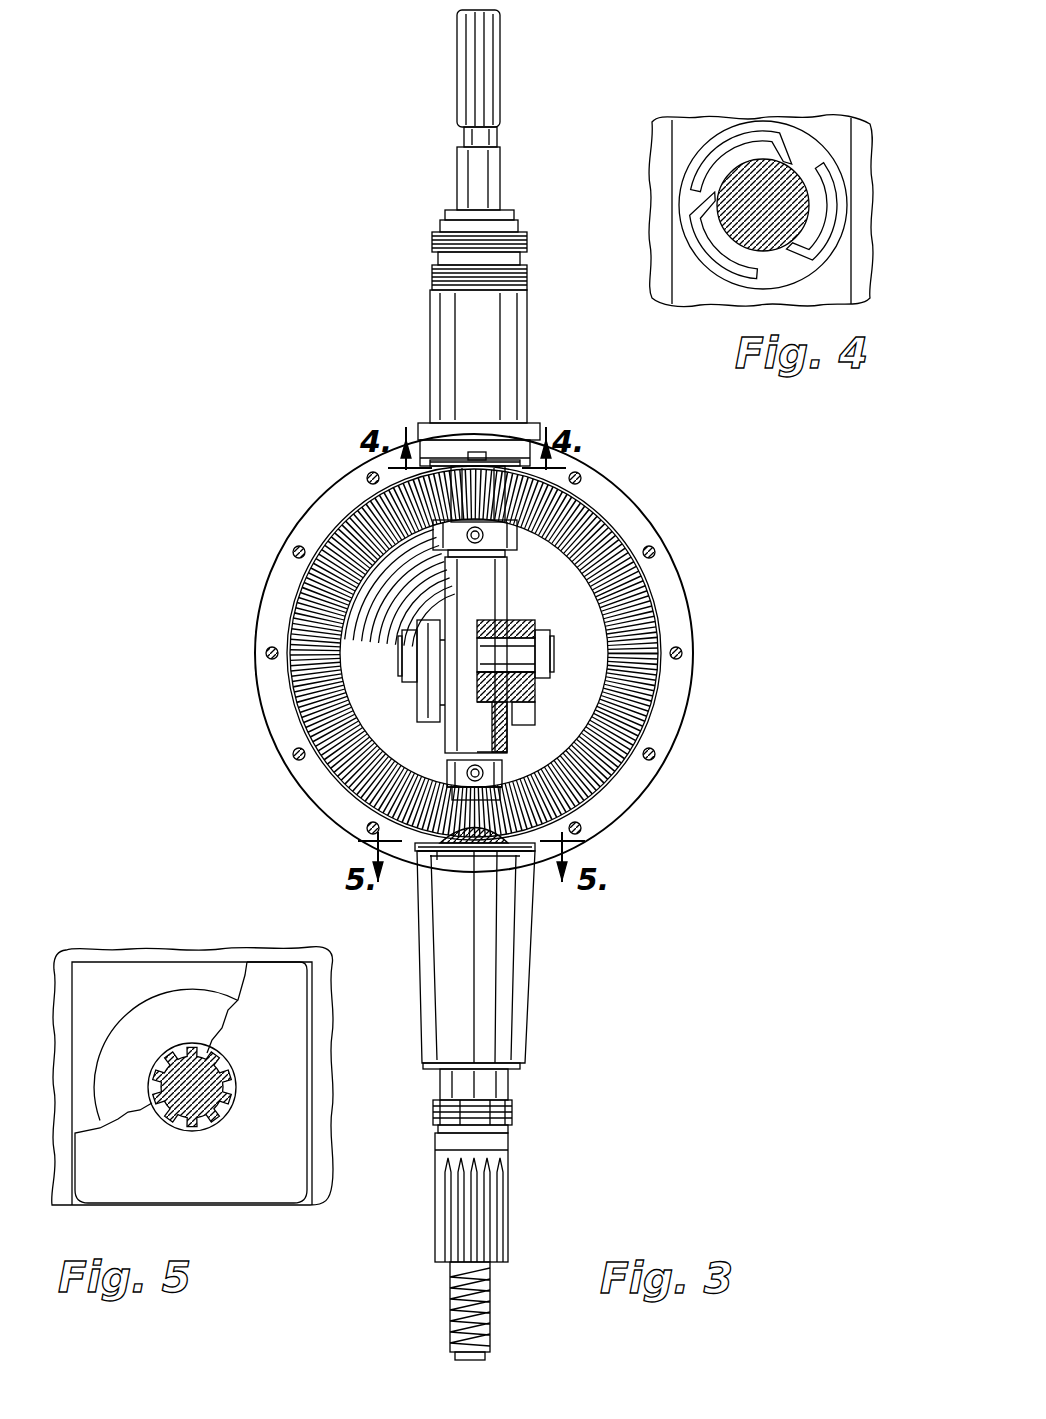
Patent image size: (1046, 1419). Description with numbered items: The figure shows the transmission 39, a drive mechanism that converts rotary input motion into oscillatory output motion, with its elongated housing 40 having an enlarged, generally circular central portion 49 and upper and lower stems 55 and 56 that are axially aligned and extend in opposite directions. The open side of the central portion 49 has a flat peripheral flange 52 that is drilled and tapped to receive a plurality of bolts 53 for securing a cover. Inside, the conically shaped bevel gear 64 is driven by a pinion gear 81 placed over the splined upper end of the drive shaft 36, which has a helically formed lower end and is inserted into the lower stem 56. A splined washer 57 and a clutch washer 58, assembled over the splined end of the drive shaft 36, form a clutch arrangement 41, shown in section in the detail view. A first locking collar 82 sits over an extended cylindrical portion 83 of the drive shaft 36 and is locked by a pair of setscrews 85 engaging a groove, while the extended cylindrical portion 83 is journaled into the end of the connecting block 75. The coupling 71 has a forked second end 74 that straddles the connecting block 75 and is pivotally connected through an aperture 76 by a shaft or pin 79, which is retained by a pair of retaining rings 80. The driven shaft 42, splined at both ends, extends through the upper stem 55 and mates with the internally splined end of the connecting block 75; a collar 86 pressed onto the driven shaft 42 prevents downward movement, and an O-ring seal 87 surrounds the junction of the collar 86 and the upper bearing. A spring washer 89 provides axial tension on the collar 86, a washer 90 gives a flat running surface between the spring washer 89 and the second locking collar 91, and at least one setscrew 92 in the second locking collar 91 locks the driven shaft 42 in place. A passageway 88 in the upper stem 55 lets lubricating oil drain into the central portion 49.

In FIG. 3, the drive shaft 36 is at (490, 1285).
In FIG. 5, the drive shaft 36 is at (230, 1072).
In FIG. 3, the transmission 39 is at (315, 342).
In FIG. 3, the housing 40 is at (600, 456).
In FIG. 4, the housing 40 is at (710, 298).
In FIG. 5, the housing 40 is at (322, 1141).
In FIG. 3, the clutch arrangement 41 is at (522, 858).
In FIG. 5, the clutch arrangement 41 is at (250, 1218).
In FIG. 3, the driven shaft 42 is at (457, 178).
In FIG. 4, the driven shaft 42 is at (745, 192).
In FIG. 3, the central portion 49 is at (692, 700).
In FIG. 3, the peripheral flange 52 is at (670, 614).
In FIG. 3, the bolts 53 is at (655, 551).
In FIG. 3, the upper stem 55 is at (528, 333).
In FIG. 3, the lower stem 56 is at (535, 1010).
In FIG. 3, the splined washer 57 is at (458, 856).
In FIG. 5, the splined washer 57 is at (148, 990).
In FIG. 3, the clutch washer 58 is at (598, 822).
In FIG. 5, the clutch washer 58 is at (286, 991).
In FIG. 3, the bevel gear 64 is at (538, 637).
In FIG. 3, the coupling 71 is at (520, 735).
In FIG. 3, the second end of coupling 74 is at (535, 712).
In FIG. 3, the connecting block 75 is at (445, 595).
In FIG. 3, the aperture 76 is at (520, 622).
In FIG. 3, the shaft or pin 79 is at (553, 655).
In FIG. 3, the retaining rings 80 is at (417, 660).
In FIG. 3, the pinion gear 81 is at (437, 847).
In FIG. 3, the first locking collar 82 is at (447, 766).
In FIG. 3, the extended cylindrical portion 83 is at (507, 728).
In FIG. 3, the setscrews 85 is at (503, 775).
In FIG. 3, the collar 86 is at (516, 215).
In FIG. 3, the O-ring seal 87 is at (520, 227).
In FIG. 3, the passageway 88 is at (478, 458).
In FIG. 3, the spring washer 89 is at (500, 462).
In FIG. 4, the spring washer 89 is at (830, 262).
In FIG. 3, the washer 90 is at (428, 468).
In FIG. 4, the washer 90 is at (800, 170).
In FIG. 3, the second locking collar 91 is at (410, 512).
In FIG. 3, the setscrew 92 is at (512, 546).